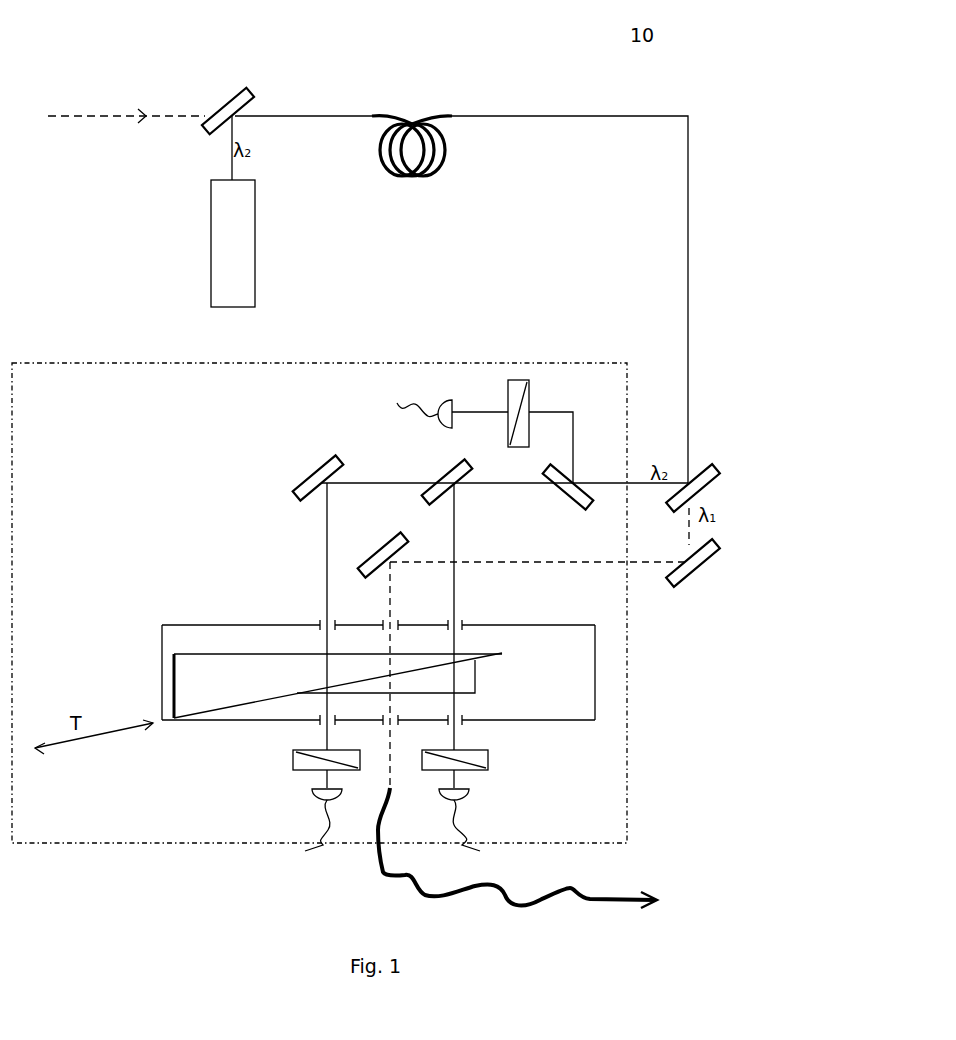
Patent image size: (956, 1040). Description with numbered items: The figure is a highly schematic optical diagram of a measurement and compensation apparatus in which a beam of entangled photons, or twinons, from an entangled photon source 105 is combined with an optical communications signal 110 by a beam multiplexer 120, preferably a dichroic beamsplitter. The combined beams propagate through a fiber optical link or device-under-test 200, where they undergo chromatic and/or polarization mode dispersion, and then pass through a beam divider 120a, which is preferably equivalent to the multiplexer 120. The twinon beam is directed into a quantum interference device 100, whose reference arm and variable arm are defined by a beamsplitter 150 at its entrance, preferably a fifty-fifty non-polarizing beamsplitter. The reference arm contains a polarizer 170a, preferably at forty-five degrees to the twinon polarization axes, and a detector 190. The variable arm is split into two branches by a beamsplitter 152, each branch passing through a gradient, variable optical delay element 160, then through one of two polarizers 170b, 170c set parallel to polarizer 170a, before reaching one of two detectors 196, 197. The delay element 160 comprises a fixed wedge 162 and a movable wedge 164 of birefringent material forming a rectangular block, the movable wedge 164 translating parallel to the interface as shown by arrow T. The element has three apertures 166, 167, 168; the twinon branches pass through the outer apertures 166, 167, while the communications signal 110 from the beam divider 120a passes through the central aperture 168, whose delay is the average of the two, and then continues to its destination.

The quantum interference device 100 is at (178, 362).
The entangled photon source 105 is at (208, 228).
The optical communications signal 110 is at (110, 105).
The beam multiplexer 120 is at (250, 80).
The beam divider 120a is at (707, 468).
The beamsplitter 150 is at (577, 508).
The beamsplitter 152 is at (423, 497).
The gradient, variable optical delay element 160 is at (162, 626).
The fixed wedge 162 is at (477, 677).
The movable wedge 164 is at (338, 685).
The aperture 166 is at (320, 615).
The aperture 167 is at (463, 617).
The central aperture 168 is at (395, 620).
The polarizer 170a is at (527, 382).
The polarizer 170b is at (291, 753).
The polarizer 170c is at (492, 755).
The detector 190 is at (437, 428).
The detector 196 is at (310, 797).
The detector 197 is at (470, 798).
The fiber optical link or device-under-test 200 is at (437, 105).